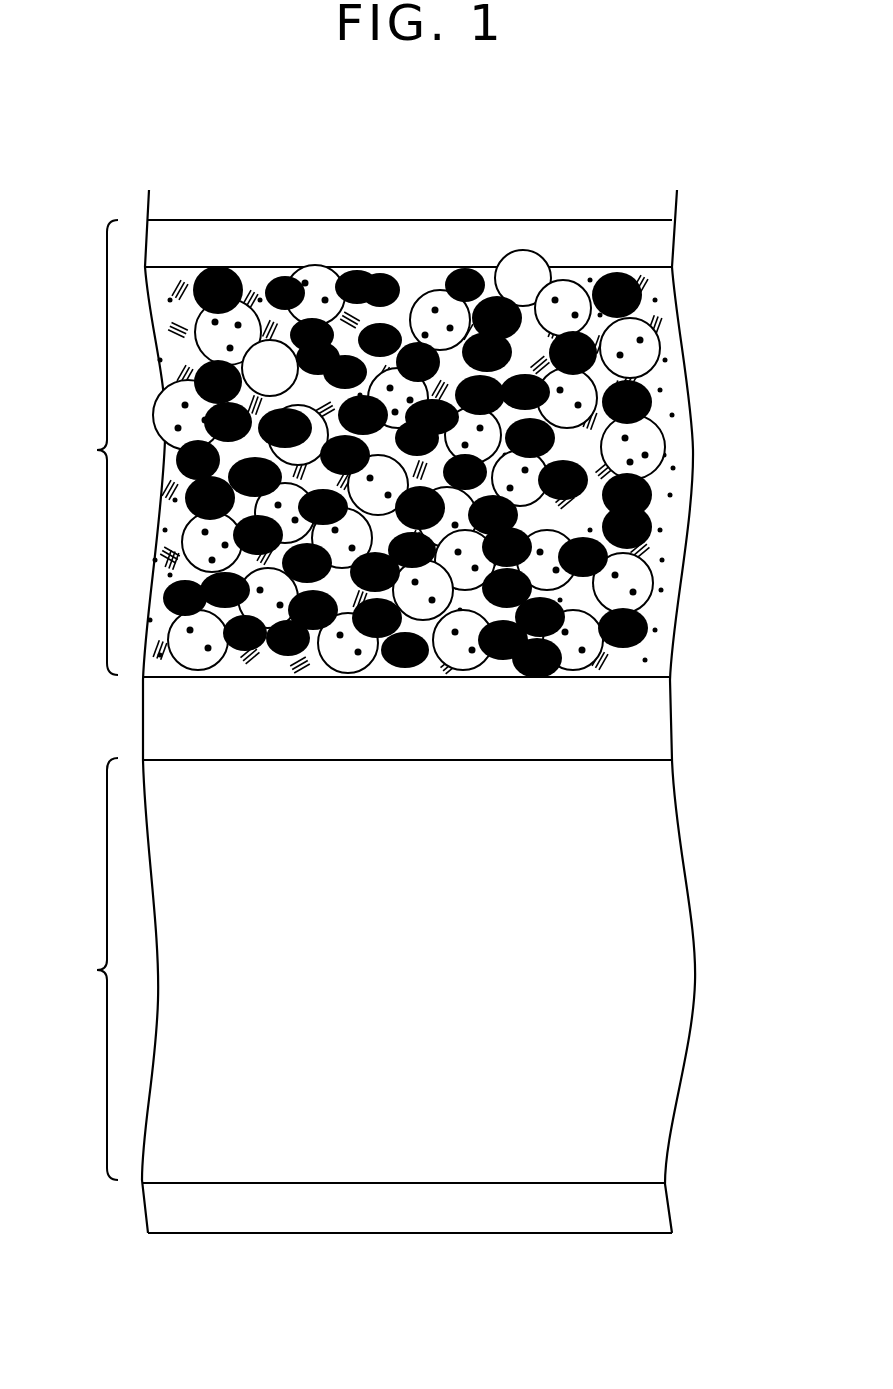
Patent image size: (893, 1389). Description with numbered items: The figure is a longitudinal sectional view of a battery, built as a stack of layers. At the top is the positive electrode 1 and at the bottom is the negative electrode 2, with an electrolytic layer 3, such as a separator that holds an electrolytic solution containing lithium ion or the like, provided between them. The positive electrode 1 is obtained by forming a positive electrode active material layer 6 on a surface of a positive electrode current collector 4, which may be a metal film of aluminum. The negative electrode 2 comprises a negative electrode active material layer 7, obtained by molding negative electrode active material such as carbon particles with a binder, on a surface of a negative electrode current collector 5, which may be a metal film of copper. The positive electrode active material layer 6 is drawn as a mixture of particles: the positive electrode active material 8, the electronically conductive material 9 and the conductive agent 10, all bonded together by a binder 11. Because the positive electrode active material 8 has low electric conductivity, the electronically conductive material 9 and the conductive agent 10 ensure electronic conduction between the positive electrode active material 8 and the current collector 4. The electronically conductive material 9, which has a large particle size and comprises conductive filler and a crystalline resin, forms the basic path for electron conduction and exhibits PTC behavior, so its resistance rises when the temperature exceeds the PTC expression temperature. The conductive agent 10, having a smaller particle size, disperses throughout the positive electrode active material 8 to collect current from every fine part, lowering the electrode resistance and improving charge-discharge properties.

The positive electrode 1 is at (95, 447).
The negative electrode 2 is at (95, 969).
The electrolytic layer 3 is at (152, 720).
The positive electrode current collector 4 is at (584, 238).
The negative electrode current collector 5 is at (605, 1215).
The positive electrode active material layer 6 is at (676, 436).
The negative electrode active material layer 7 is at (655, 840).
The positive electrode active material 8 is at (650, 340).
The electronically conductive material 9 is at (650, 631).
The conductive agent 10 is at (672, 493).
The binder 11 is at (660, 284).